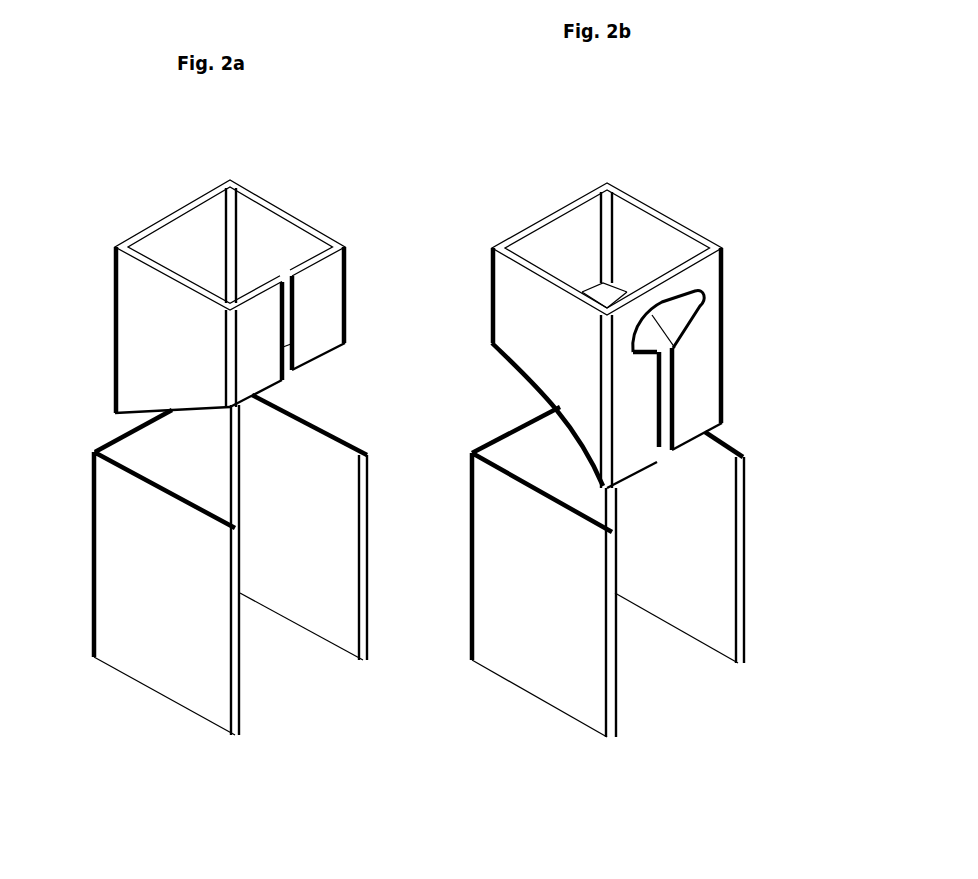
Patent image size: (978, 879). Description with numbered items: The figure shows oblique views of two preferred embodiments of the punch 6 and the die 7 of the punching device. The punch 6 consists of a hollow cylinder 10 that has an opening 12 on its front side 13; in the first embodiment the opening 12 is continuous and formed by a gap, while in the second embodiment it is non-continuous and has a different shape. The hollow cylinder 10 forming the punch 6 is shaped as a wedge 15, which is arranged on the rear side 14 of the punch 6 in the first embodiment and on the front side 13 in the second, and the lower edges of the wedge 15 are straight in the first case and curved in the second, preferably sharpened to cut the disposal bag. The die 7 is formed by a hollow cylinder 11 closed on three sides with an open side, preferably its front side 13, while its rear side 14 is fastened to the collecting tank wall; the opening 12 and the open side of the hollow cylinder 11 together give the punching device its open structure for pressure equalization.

In FIG. 2A, the punch 6 is at (266, 228).
In FIG. 2B, the punch 6 is at (652, 238).
In FIG. 2A, the die 7 is at (222, 622).
In FIG. 2B, the die 7 is at (598, 615).
In FIG. 2A, the hollow cylinder 10 is at (134, 310).
In FIG. 2B, the hollow cylinder 10 is at (514, 311).
In FIG. 2A, the hollow cylinder 11 is at (322, 613).
In FIG. 2B, the hollow cylinder 11 is at (718, 528).
In FIG. 2A, the opening 12 is at (290, 335).
In FIG. 2B, the opening 12 is at (670, 322).
In FIG. 2A, the front side 13 is at (293, 706).
In FIG. 2B, the front side 13 is at (677, 683).
In FIG. 2A, the rear side 14 is at (94, 666).
In FIG. 2B, the rear side 14 is at (465, 684).
In FIG. 2A, the wedge 15 is at (134, 405).
In FIG. 2B, the wedge 15 is at (697, 423).